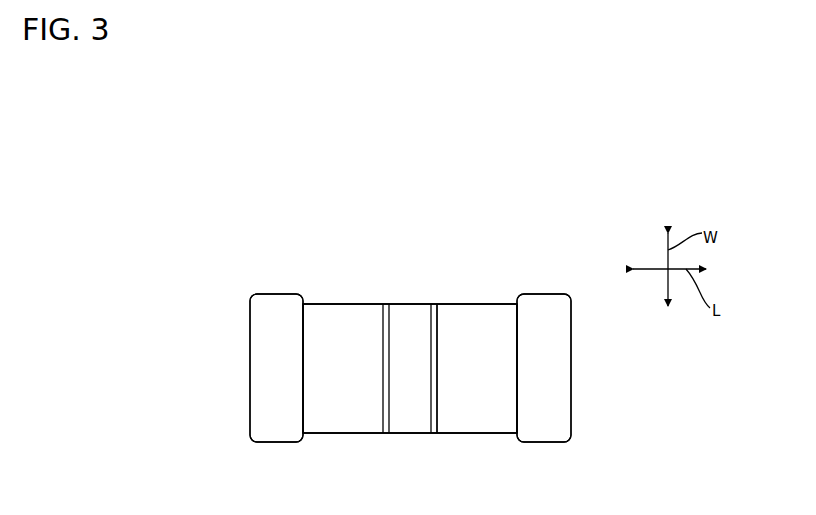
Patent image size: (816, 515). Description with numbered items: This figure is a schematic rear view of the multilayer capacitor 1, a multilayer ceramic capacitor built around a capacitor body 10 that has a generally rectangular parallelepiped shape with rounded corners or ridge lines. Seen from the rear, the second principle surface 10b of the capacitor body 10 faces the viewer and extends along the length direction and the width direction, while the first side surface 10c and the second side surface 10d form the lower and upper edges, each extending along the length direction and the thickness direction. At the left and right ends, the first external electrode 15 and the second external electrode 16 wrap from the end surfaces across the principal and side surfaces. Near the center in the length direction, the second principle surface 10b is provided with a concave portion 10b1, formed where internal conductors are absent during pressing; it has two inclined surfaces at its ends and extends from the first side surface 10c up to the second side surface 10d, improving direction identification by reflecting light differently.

The multilayer capacitor 1 is at (571, 272).
The capacitor body 10 is at (473, 438).
The second principle surface 10b is at (475, 321).
The concave portion 10b1 is at (413, 419).
The first side surface 10c is at (340, 435).
The second side surface 10d is at (347, 303).
The first external electrode 15 is at (250, 403).
The second external electrode 16 is at (572, 410).